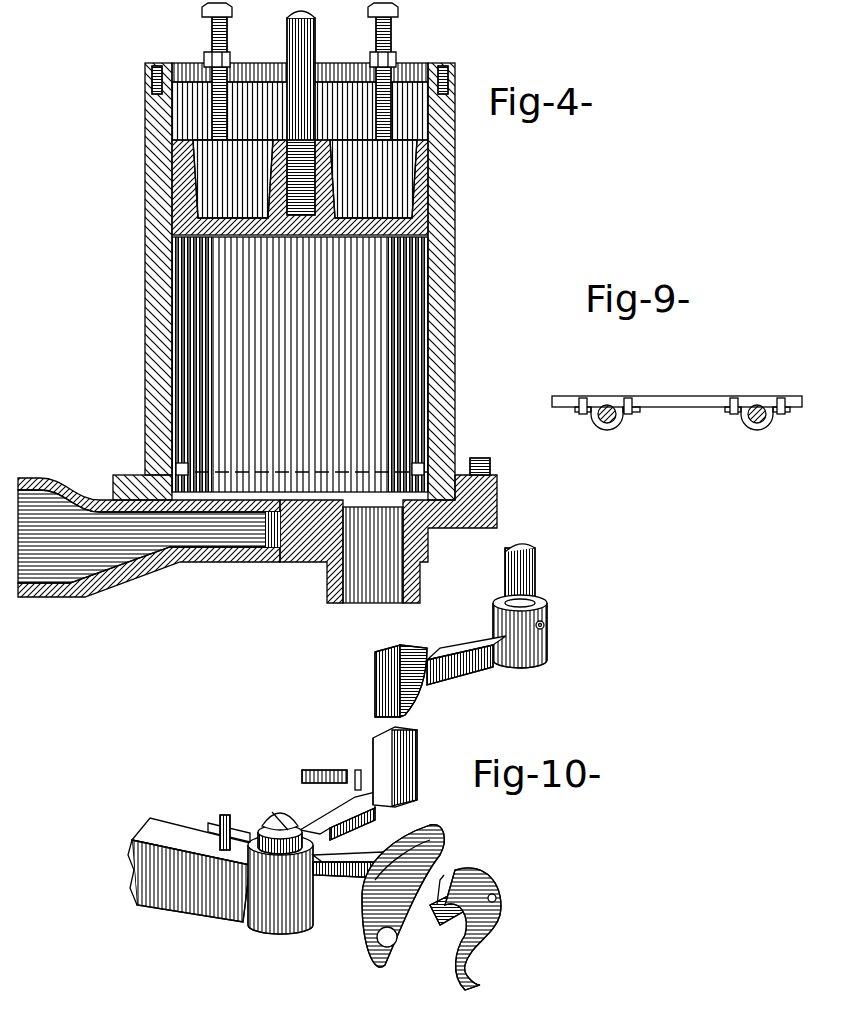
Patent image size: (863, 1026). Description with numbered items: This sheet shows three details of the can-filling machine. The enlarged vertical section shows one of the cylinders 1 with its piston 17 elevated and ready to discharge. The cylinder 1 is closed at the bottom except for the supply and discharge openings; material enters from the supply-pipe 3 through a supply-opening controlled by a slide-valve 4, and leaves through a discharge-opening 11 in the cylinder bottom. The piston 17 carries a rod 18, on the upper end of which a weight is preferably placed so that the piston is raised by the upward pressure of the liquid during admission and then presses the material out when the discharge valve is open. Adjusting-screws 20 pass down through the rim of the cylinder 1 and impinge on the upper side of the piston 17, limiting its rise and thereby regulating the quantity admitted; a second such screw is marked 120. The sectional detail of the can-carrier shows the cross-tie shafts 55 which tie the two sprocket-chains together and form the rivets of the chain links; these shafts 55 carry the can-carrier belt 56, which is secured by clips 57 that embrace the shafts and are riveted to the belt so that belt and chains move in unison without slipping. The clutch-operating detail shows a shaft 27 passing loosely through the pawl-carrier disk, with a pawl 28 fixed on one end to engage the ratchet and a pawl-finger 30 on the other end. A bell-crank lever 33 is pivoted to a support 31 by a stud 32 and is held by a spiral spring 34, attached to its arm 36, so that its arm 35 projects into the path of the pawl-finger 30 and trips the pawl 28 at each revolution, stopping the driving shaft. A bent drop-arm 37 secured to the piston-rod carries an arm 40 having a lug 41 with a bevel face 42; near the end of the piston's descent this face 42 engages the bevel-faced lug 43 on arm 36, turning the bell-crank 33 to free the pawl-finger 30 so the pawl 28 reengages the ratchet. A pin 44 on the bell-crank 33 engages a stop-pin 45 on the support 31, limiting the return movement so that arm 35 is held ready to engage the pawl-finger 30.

In FIG. 4, the cylinder 1 is at (457, 267).
In FIG. 4, the supply-pipe 3 is at (68, 492).
In FIG. 4, the slide-valve 4 is at (223, 508).
In FIG. 4, the discharge-opening 11 is at (378, 505).
In FIG. 4, the piston 17 is at (172, 238).
In FIG. 4, the piston rod 18 is at (315, 38).
In FIG. 4, the adjusting-screws 20 is at (230, 36).
In FIG. 4, the bolt 120 is at (396, 32).
In FIG. 9, the shafts 55 is at (595, 425).
In FIG. 9, the can-carrier belt 56 is at (687, 397).
In FIG. 9, the clips 57 is at (627, 421).
In FIG. 10, the shaft 27 is at (440, 900).
In FIG. 10, the pawl 28 is at (500, 882).
In FIG. 10, the pawl-finger 30 is at (365, 935).
In FIG. 10, the support 31 is at (157, 905).
In FIG. 10, the stud 32 is at (273, 805).
In FIG. 10, the bell-crank lever 33 is at (307, 800).
In FIG. 10, the spring 34 is at (320, 772).
In FIG. 10, the arm 35 is at (358, 878).
In FIG. 10, the arm 36 is at (400, 822).
In FIG. 10, the drop-arm 37 is at (535, 553).
In FIG. 10, the arm 40 is at (476, 676).
In FIG. 10, the lug 41 is at (391, 688).
In FIG. 10, the bevel face 42 is at (406, 705).
In FIG. 10, the bevel-faced lug 43 is at (418, 762).
In FIG. 10, the pin 44 is at (212, 823).
In FIG. 10, the stop-pin 45 is at (229, 815).